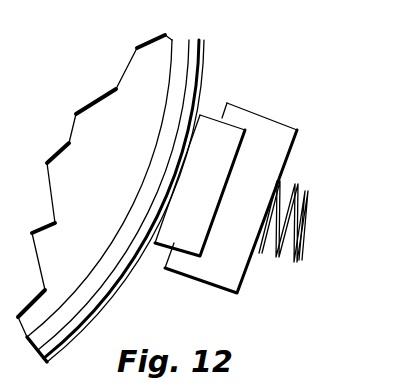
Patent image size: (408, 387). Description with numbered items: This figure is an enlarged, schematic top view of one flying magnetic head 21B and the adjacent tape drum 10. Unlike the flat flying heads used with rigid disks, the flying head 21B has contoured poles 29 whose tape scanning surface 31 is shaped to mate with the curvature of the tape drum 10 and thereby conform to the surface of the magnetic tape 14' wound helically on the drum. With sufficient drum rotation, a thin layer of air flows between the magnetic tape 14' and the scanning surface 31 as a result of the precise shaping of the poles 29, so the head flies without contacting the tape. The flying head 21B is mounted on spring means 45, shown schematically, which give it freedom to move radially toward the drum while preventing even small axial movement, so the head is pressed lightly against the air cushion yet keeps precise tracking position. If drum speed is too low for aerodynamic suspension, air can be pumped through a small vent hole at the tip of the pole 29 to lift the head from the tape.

The tape drum 10 is at (182, 53).
The magnetic tape 14' is at (151, 196).
The tape scanning surface 31 is at (184, 163).
The flying magnetic head 21B is at (212, 275).
The poles 29 is at (162, 248).
The spring means 45 is at (275, 255).